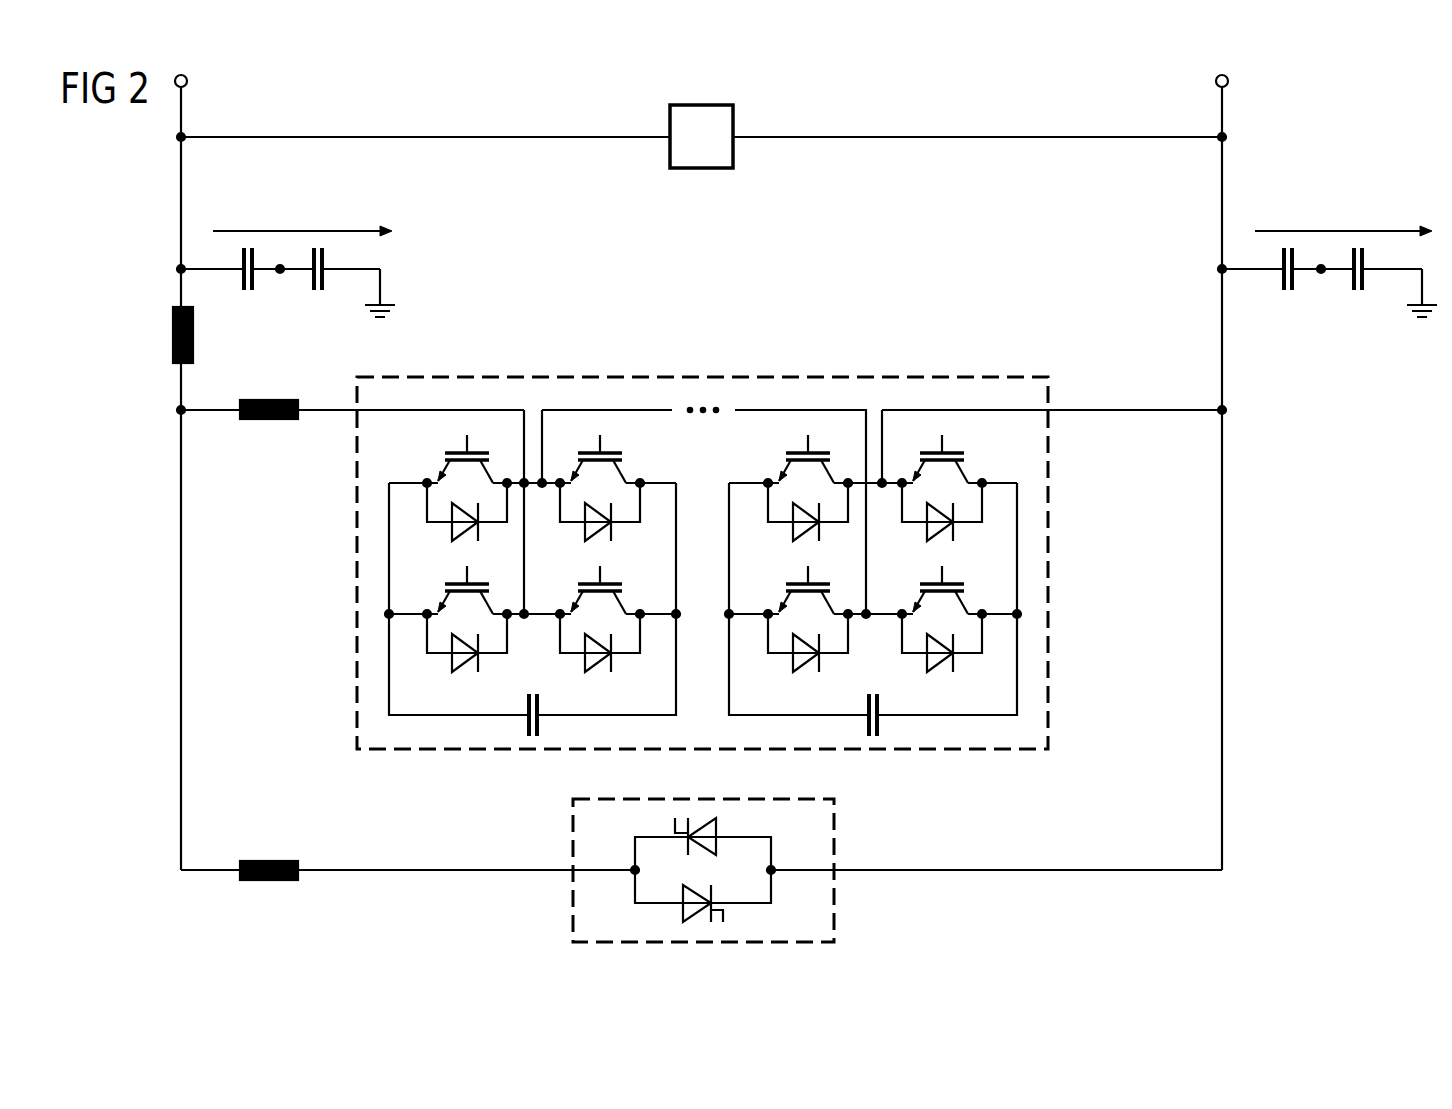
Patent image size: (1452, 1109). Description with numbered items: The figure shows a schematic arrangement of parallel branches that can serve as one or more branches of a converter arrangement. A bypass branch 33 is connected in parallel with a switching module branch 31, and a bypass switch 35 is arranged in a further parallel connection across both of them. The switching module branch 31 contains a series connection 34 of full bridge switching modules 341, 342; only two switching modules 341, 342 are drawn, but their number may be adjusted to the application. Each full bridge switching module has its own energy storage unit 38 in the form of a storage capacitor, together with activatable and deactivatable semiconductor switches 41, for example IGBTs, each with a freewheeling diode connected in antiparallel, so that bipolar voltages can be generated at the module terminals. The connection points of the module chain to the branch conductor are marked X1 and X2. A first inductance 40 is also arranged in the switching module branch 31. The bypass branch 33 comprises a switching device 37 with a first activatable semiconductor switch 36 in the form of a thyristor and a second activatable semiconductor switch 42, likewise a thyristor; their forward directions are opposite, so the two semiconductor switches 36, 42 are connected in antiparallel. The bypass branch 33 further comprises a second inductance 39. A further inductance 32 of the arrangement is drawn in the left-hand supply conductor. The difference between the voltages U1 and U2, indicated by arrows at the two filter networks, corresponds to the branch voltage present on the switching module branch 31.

The switching module branch 31 is at (1130, 406).
The further inductance 32 is at (173, 339).
The bypass branch 33 is at (1072, 873).
The series connection of switching modules 34 is at (714, 538).
The bypass switch 35 is at (703, 170).
The first activatable semiconductor switch 36 is at (699, 925).
The switching device 37 is at (664, 872).
The energy storage unit 38 is at (522, 725).
The second inductance 39 is at (268, 883).
The first inductance 40 is at (268, 398).
The semiconductor switch 41 is at (427, 640).
The second activatable semiconductor switch 42 is at (703, 817).
The switching module 341 is at (476, 600).
The switching module 342 is at (930, 511).
The first connection point X1 is at (889, 443).
The second connection point X2 is at (870, 433).
The voltage U1 is at (297, 228).
The voltage U2 is at (1337, 228).